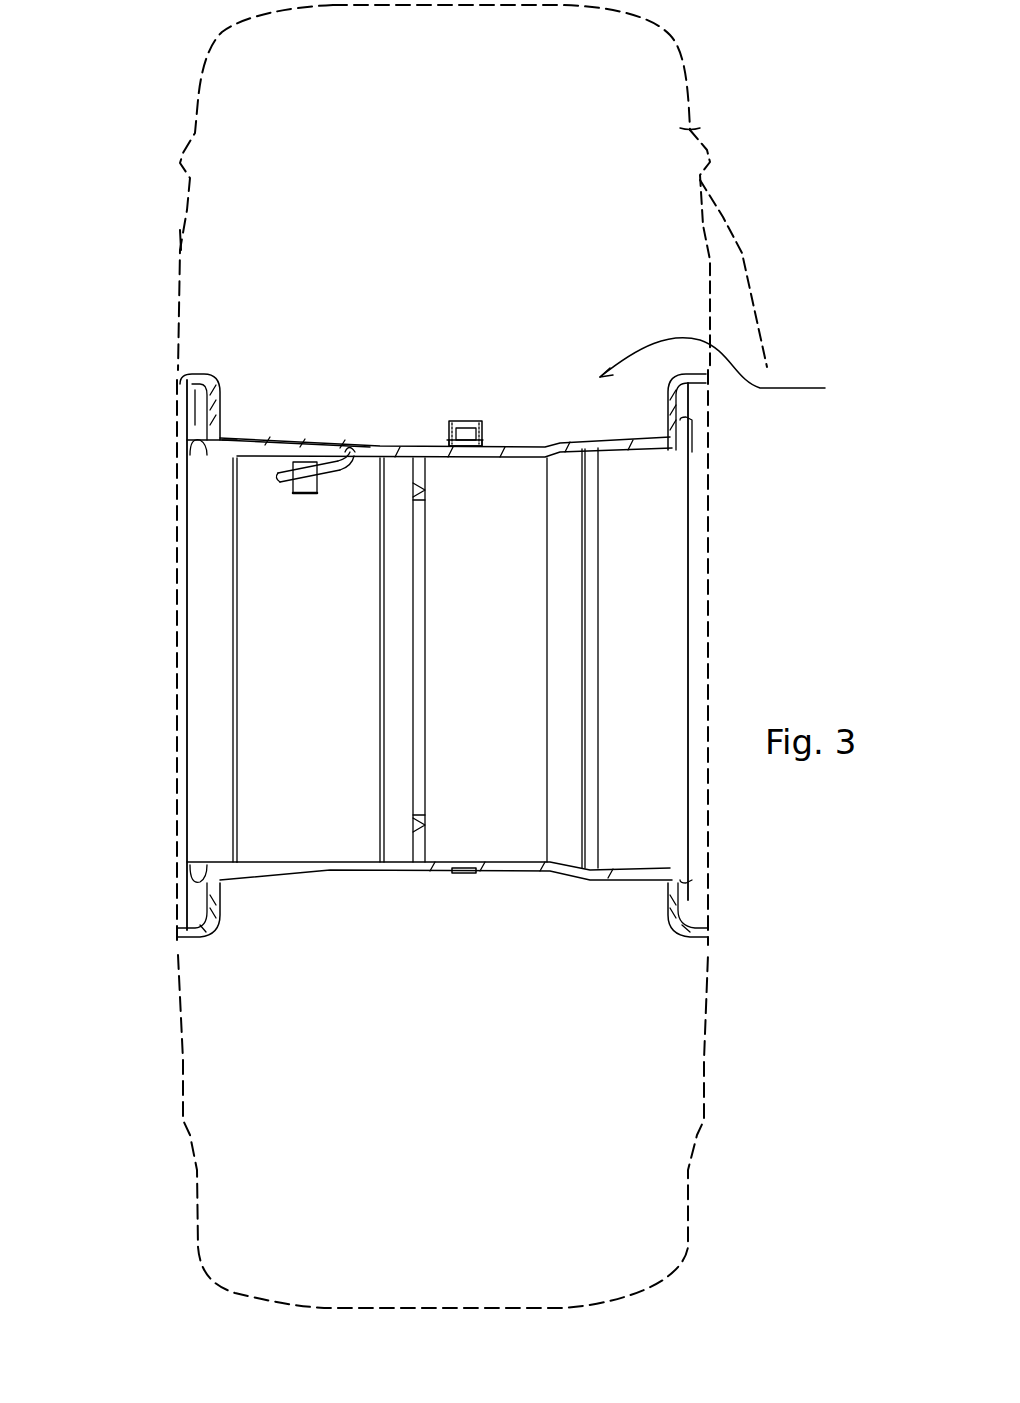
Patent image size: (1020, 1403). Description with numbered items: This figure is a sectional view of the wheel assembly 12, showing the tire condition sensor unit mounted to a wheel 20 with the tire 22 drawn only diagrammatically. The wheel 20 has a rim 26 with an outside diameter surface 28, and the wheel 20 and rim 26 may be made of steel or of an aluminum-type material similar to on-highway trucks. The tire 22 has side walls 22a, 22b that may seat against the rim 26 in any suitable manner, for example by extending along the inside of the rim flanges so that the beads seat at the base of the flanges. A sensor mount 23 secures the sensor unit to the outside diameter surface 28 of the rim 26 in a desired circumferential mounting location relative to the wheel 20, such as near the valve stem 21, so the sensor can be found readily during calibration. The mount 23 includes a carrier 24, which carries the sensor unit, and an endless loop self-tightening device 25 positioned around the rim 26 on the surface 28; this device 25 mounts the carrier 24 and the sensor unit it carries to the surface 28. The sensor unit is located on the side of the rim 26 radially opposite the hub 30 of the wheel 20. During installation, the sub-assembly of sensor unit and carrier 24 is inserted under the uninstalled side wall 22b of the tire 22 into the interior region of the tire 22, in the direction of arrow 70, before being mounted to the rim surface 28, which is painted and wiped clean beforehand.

The wheel assembly 12 is at (128, 172).
The wheel 20 is at (648, 582).
The valve stem 21 is at (290, 478).
The tire 22 is at (690, 130).
The side wall 22a is at (180, 230).
The side wall 22b is at (707, 153).
The sensor mount 23 is at (493, 413).
The carrier 24 is at (449, 443).
The endless loop self-tightening device 25 is at (458, 420).
The rim 26 is at (645, 458).
The outside diameter surface 28 is at (260, 437).
The hub 30 is at (425, 493).
The arrow 70 is at (760, 390).